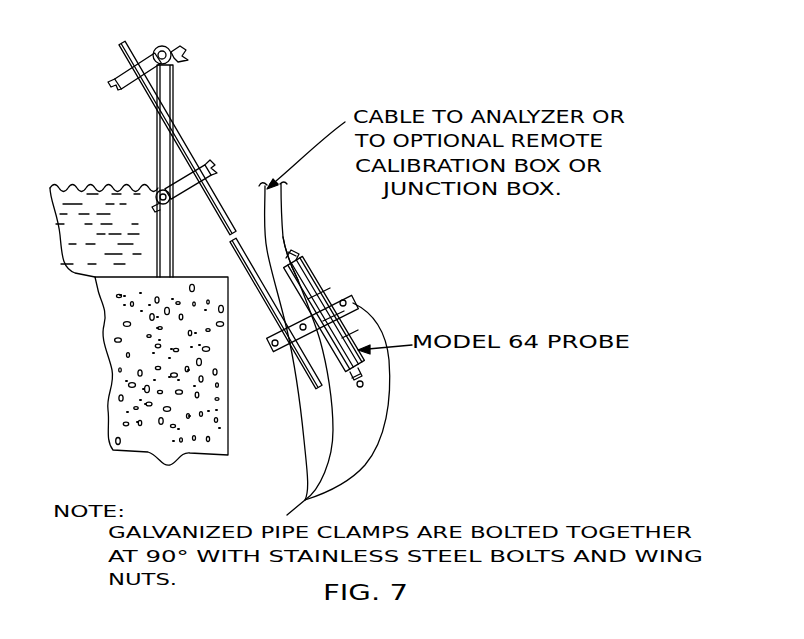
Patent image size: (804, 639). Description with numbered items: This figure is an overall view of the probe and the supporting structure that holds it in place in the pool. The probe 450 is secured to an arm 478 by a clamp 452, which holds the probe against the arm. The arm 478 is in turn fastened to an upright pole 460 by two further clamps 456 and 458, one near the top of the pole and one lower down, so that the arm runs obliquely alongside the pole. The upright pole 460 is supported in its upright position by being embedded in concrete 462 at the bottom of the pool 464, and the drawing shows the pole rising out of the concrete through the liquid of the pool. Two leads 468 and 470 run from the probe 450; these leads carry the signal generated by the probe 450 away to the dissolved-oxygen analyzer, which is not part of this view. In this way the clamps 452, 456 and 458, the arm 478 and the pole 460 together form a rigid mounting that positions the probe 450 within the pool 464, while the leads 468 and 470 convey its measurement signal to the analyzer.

The probe 450 is at (308, 267).
The clamp 452 is at (352, 300).
The clamp 456 is at (187, 192).
The clamp 458 is at (142, 63).
The upright pole 460 is at (177, 90).
The concrete 462 is at (105, 381).
The pool 464 is at (100, 177).
The lead 468 is at (265, 210).
The lead 470 is at (283, 238).
The arm 478 is at (180, 135).